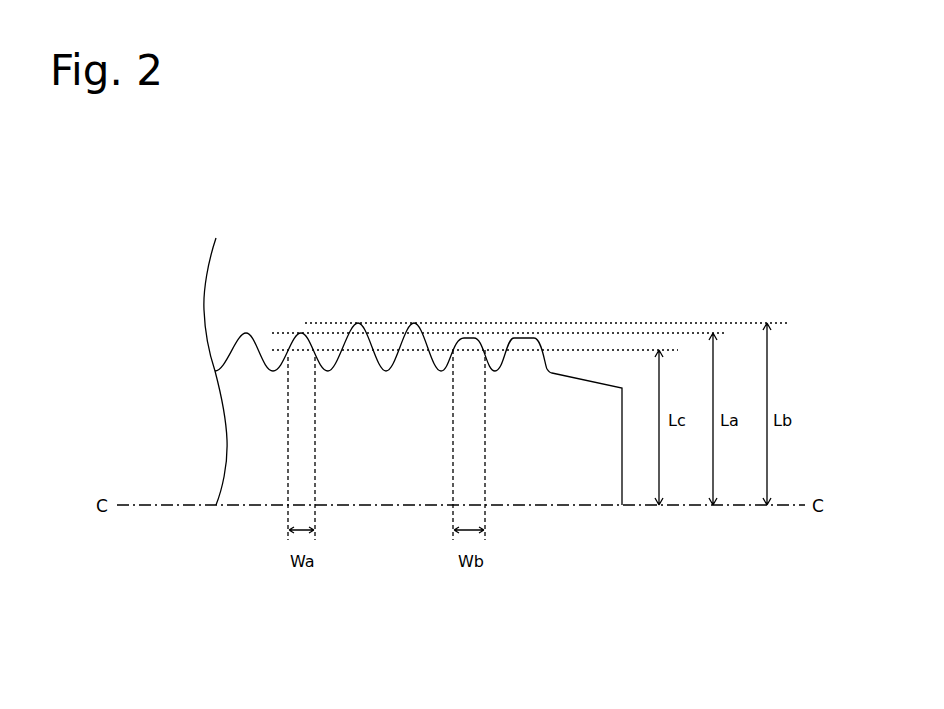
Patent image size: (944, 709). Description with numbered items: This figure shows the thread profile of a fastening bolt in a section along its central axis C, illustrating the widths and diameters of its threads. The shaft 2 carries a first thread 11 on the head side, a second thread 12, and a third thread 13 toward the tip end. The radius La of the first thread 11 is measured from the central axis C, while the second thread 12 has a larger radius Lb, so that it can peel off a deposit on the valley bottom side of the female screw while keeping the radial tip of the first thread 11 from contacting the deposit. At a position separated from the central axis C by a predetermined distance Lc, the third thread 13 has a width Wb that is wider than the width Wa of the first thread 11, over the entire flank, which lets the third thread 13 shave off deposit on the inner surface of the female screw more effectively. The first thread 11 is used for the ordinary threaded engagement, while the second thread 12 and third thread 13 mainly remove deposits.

The shaft 2 is at (413, 413).
The first thread 11 is at (247, 333).
The second thread 12 is at (414, 323).
The third thread 13 is at (524, 338).